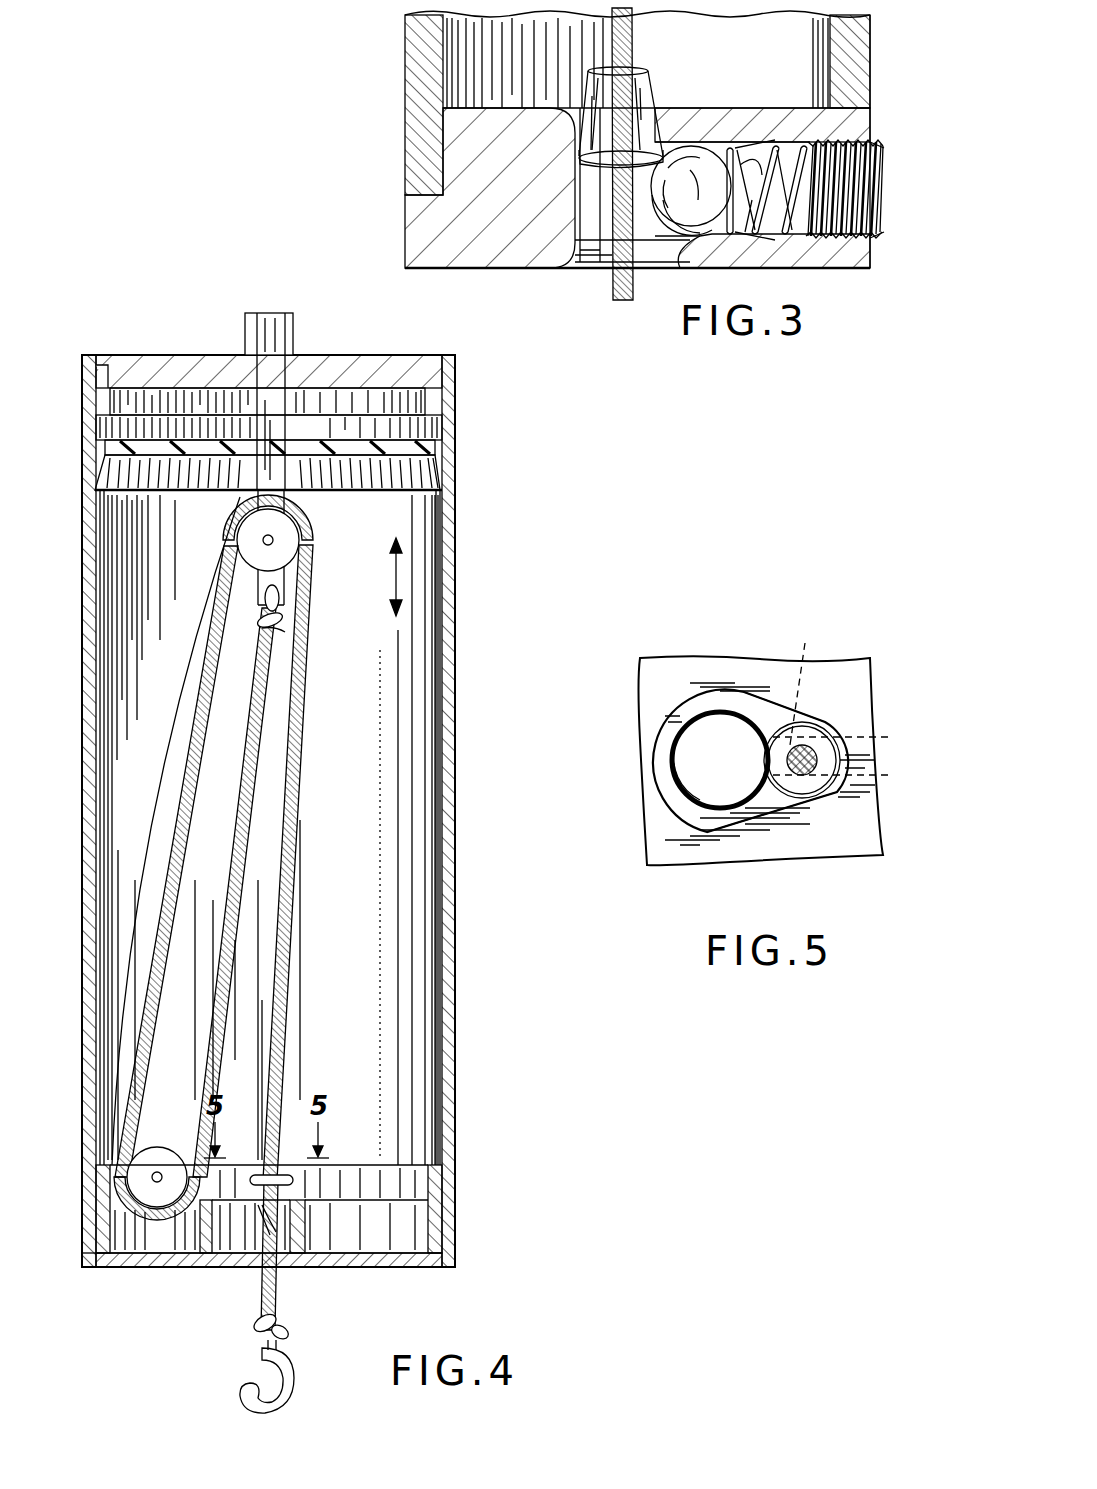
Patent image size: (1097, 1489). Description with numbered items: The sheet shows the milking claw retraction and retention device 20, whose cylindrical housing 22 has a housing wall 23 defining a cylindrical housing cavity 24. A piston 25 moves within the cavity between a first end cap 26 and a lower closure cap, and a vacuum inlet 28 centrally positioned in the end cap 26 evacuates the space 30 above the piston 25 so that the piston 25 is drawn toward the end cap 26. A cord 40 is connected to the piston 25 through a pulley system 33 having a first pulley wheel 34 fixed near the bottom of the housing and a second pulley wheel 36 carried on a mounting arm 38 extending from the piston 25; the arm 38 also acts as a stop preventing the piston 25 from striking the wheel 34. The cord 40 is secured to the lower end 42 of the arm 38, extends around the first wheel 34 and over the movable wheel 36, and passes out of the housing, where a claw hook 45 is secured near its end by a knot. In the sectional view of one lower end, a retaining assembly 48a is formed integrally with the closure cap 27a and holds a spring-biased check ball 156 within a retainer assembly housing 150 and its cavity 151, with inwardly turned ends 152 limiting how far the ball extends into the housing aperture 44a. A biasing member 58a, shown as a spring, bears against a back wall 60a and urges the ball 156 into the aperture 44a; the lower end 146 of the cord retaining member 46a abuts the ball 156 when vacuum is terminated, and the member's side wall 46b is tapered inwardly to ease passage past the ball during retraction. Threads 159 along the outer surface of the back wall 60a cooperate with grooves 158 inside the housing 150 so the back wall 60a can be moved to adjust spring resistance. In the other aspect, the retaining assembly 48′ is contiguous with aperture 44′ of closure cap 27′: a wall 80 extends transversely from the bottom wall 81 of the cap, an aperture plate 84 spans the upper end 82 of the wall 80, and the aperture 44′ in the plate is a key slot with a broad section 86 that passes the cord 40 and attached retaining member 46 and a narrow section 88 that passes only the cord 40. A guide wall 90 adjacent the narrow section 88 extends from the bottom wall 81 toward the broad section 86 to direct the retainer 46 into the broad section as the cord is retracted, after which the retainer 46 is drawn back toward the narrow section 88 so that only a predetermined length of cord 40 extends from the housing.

In FIG. 4, the milking claw retraction and retention device 20 is at (495, 554).
In FIG. 3, the cylindrical housing 22 is at (400, 101).
In FIG. 4, the cylindrical housing 22 is at (458, 668).
In FIG. 4, the housing wall 23 is at (82, 690).
In FIG. 3, the cylindrical housing cavity 24 is at (733, 50).
In FIG. 4, the cylindrical housing cavity 24 is at (405, 685).
In FIG. 4, the piston 25 is at (420, 448).
In FIG. 4, the first end cap 26 is at (408, 358).
In FIG. 3, the closure cap 27a is at (470, 150).
In FIG. 4, the closure cap 27′ is at (88, 1255).
In FIG. 4, the vacuum inlet 28 is at (265, 325).
In FIG. 4, the space 30 is at (385, 425).
In FIG. 4, the pulley system 33 is at (162, 757).
In FIG. 4, the first pulley wheel 34 is at (148, 1157).
In FIG. 4, the second pulley wheel 36 is at (287, 525).
In FIG. 4, the mounting arm 38 is at (283, 574).
In FIG. 3, the cord 40 is at (620, 285).
In FIG. 4, the cord 40 is at (300, 717).
In FIG. 5, the cord 40 is at (812, 773).
In FIG. 4, the lower end 42 is at (258, 596).
In FIG. 3, the housing aperture 44a is at (592, 246).
In FIG. 4, the aperture 44′ is at (230, 1255).
In FIG. 5, the aperture 44′ is at (683, 762).
In FIG. 4, the claw hook 45 is at (245, 1368).
In FIG. 3, the retaining member 46 is at (621, 117).
In FIG. 4, the retaining member 46 is at (258, 1173).
In FIG. 5, the retaining member 46 is at (812, 730).
In FIG. 3, the cord retaining member 46a is at (640, 88).
In FIG. 3, the side wall 46b is at (592, 96).
In FIG. 3, the retaining assembly 48a is at (797, 77).
In FIG. 4, the retaining assembly 48′ is at (318, 1232).
In FIG. 3, the biasing member 58a is at (775, 163).
In FIG. 3, the back wall 60a is at (882, 222).
In FIG. 4, the wall 80 is at (215, 1255).
In FIG. 5, the wall 80 is at (735, 720).
In FIG. 4, the bottom wall 81 is at (115, 1272).
In FIG. 5, the bottom wall 81 is at (652, 697).
In FIG. 4, the upper end 82 is at (302, 1212).
In FIG. 5, the upper end 82 is at (841, 778).
In FIG. 4, the aperture plate 84 is at (298, 1195).
In FIG. 5, the aperture plate 84 is at (705, 700).
In FIG. 5, the broad section 86 is at (697, 782).
In FIG. 5, the narrow section 88 is at (841, 738).
In FIG. 4, the guide wall 90 is at (253, 1230).
In FIG. 5, the guide wall 90 is at (811, 687).
In FIG. 3, the lower end 146 is at (600, 168).
In FIG. 3, the retainer assembly housing 150 is at (803, 99).
In FIG. 3, the assembly housing cavity 151 is at (772, 215).
In FIG. 3, the inwardly turned ends 152 is at (690, 135).
In FIG. 3, the check ball 156 is at (678, 212).
In FIG. 3, the grooves 158 is at (835, 152).
In FIG. 3, the threads 159 is at (850, 182).